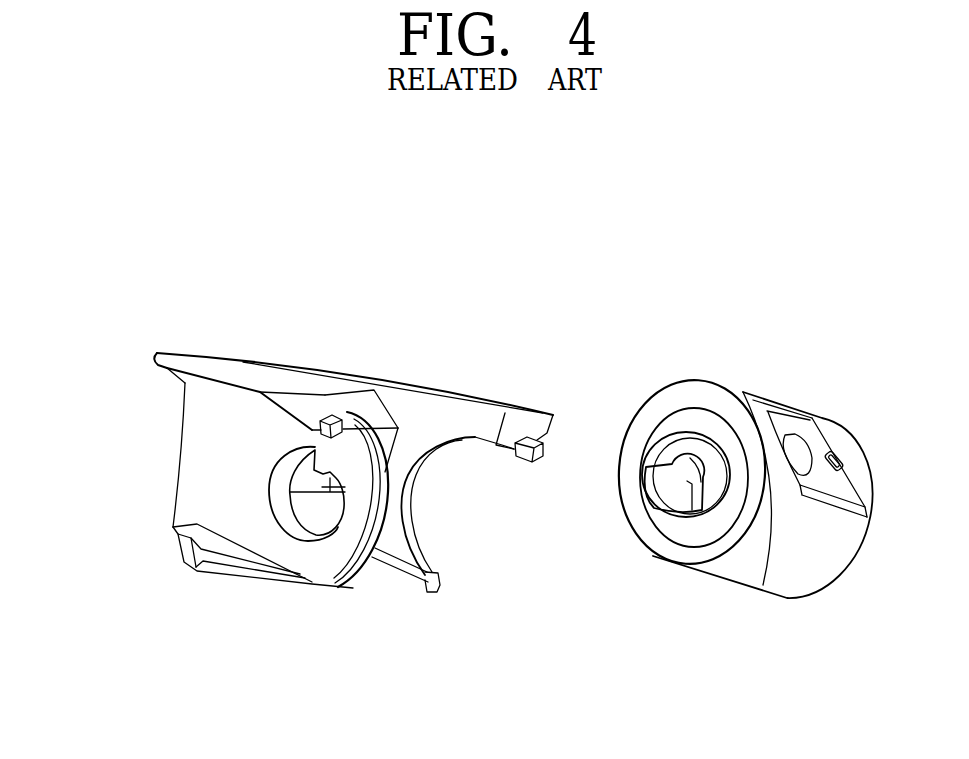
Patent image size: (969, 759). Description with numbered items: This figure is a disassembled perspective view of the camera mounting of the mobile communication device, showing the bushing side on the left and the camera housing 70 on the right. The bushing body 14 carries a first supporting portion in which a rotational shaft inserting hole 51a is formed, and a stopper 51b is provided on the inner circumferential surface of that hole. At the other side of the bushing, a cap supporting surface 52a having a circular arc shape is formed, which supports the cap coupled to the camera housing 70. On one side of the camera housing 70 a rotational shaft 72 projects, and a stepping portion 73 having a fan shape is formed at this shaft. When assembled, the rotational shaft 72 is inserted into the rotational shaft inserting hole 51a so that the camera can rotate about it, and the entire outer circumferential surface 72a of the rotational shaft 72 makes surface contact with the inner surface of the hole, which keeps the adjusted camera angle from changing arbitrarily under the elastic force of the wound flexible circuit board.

The lamp housing holder 14 is at (157, 358).
The rotational shaft inserting hole 51a is at (283, 518).
The stopper 51b is at (332, 490).
The cap supporting surface 52a is at (420, 556).
The camera housing 70 is at (743, 392).
The rotational shaft 72 is at (712, 488).
The outer circumferential surface 72a is at (727, 487).
The stepping portion 73 is at (672, 490).